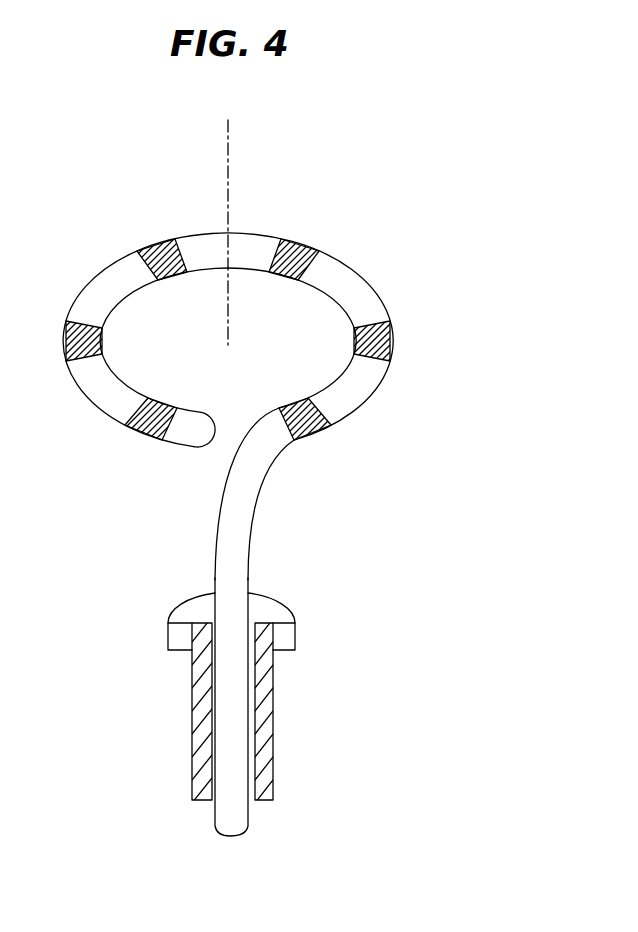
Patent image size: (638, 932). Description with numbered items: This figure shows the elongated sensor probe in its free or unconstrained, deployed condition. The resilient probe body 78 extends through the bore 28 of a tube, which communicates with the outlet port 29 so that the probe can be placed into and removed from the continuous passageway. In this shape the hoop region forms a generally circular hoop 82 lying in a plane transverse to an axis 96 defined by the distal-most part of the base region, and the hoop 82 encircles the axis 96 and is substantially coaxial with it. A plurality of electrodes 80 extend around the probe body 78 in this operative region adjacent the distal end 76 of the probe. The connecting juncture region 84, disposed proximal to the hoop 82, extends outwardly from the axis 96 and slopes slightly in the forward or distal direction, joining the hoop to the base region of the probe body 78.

The axis 96 is at (228, 162).
The hoop 82 is at (360, 272).
The distal end 76 is at (193, 452).
The electrodes 80 is at (150, 247).
The juncture region 84 is at (255, 493).
The probe body 78 is at (213, 572).
The port 29 is at (270, 612).
The bore 28 is at (262, 760).